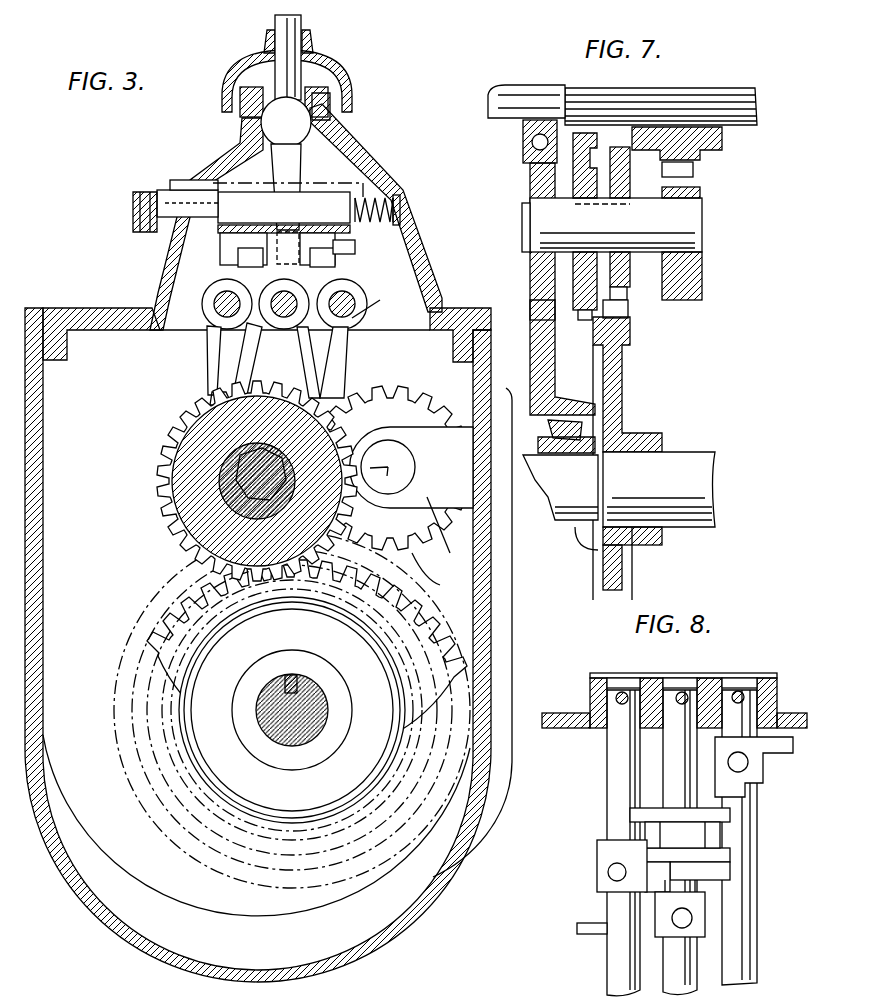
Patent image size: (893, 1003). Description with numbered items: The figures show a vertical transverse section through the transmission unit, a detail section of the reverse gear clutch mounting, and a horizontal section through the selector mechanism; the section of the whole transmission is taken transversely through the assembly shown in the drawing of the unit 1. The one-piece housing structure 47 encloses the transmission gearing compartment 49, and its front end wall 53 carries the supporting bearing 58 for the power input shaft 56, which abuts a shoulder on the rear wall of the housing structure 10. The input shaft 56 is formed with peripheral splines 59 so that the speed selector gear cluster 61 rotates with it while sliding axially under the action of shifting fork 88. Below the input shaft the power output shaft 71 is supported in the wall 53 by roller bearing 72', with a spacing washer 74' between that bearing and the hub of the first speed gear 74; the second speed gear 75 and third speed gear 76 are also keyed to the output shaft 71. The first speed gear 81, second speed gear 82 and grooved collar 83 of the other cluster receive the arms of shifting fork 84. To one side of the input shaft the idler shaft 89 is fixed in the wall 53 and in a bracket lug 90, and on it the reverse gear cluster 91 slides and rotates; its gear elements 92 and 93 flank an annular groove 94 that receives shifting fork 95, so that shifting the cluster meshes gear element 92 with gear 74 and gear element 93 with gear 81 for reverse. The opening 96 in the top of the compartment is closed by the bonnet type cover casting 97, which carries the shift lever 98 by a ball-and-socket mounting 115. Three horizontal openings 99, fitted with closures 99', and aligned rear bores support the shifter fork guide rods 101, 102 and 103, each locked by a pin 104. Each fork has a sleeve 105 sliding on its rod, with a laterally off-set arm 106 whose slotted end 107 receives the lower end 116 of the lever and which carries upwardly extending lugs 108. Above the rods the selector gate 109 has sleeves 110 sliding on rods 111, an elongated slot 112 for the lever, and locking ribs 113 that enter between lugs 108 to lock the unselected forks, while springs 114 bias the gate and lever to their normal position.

In FIG. 3, the shaft 1 is at (200, 488).
In FIG. 3, the housing structure 10 is at (344, 180).
In FIG. 3, the housing structure 47 is at (488, 581).
In FIG. 3, the transmission gearing compartment 49 is at (87, 390).
In FIG. 7, the housing end wall 53 is at (535, 283).
In FIG. 3, the power input shaft 56 is at (227, 469).
In FIG. 7, the power input shaft 56 is at (745, 130).
In FIG. 7, the supporting bearing 58 is at (531, 143).
In FIG. 3, the peripheral splines 59 is at (240, 497).
In FIG. 3, the speed selector gear cluster 61 is at (173, 429).
In FIG. 3, the power output shaft 71 is at (313, 727).
In FIG. 7, the power output shaft 71 is at (705, 465).
In FIG. 7, the anti-friction roller bearing 72' is at (560, 485).
In FIG. 3, the first speed gear 74 is at (275, 658).
In FIG. 7, the first speed gear 74 is at (635, 458).
In FIG. 7, the spacing washer 74' is at (659, 489).
In FIG. 3, the second speed gear 75 is at (150, 660).
In FIG. 3, the third speed gear 76 is at (163, 687).
In FIG. 7, the first speed gear 81 is at (652, 128).
In FIG. 7, the second speed gear 82 is at (693, 172).
In FIG. 7, the grooved collar 83 is at (705, 150).
In FIG. 3, the shifting fork 84 is at (205, 355).
In FIG. 8, the shifting fork 84 is at (590, 854).
In FIG. 3, the shifting fork 88 is at (250, 358).
In FIG. 8, the shifting fork 88 is at (590, 934).
In FIG. 3, the idler shaft 89 is at (405, 464).
In FIG. 7, the idler shaft 89 is at (690, 223).
In FIG. 3, the bracket lug 90 is at (446, 537).
In FIG. 7, the bracket lug 90 is at (687, 270).
In FIG. 3, the reverse gear cluster 91 is at (195, 193).
In FIG. 7, the reverse gear cluster 91 is at (583, 264).
In FIG. 3, the gear element 92 is at (440, 575).
In FIG. 7, the gear element 92 is at (582, 310).
In FIG. 3, the gear element 93 is at (398, 398).
In FIG. 7, the gear element 93 is at (630, 298).
In FIG. 7, the annular groove 94 is at (607, 268).
In FIG. 3, the shifting fork 95 is at (433, 293).
In FIG. 8, the shifting fork 95 is at (775, 757).
In FIG. 3, the opening 96 is at (122, 347).
In FIG. 3, the bonnet type cover casting 97 is at (160, 255).
In FIG. 8, the bonnet type cover casting 97 is at (770, 688).
In FIG. 3, the shift lever 98 is at (290, 152).
In FIG. 8, the horizontal openings 99 is at (650, 668).
In FIG. 8, the closures 99' is at (680, 641).
In FIG. 3, the shifter fork guide rod 101 is at (205, 296).
In FIG. 8, the shifter fork guide rod 101 is at (613, 762).
In FIG. 3, the shifter fork guide rod 102 is at (273, 313).
In FIG. 8, the shifter fork guide rod 102 is at (672, 750).
In FIG. 3, the shifter fork guide rod 103 is at (352, 300).
In FIG. 8, the shifter fork guide rod 103 is at (748, 893).
In FIG. 8, the pin 104 is at (626, 695).
In FIG. 8, the sleeve 105 is at (600, 868).
In FIG. 3, the laterally off-set arm 106 is at (240, 262).
In FIG. 8, the laterally off-set arm 106 is at (733, 814).
In FIG. 8, the slotted end 107 is at (640, 814).
In FIG. 8, the lug 108 is at (655, 860).
In FIG. 3, the selector gate 109 is at (225, 230).
In FIG. 3, the sleeves 110 is at (234, 192).
In FIG. 3, the rods 111 is at (191, 198).
In FIG. 3, the elongated slot 112 is at (277, 240).
In FIG. 3, the locking ribs 113 is at (345, 242).
In FIG. 3, the spring 114 is at (388, 200).
In FIG. 3, the ball-and-socket mounting 115 is at (310, 122).
In FIG. 3, the lower end 116 is at (285, 230).